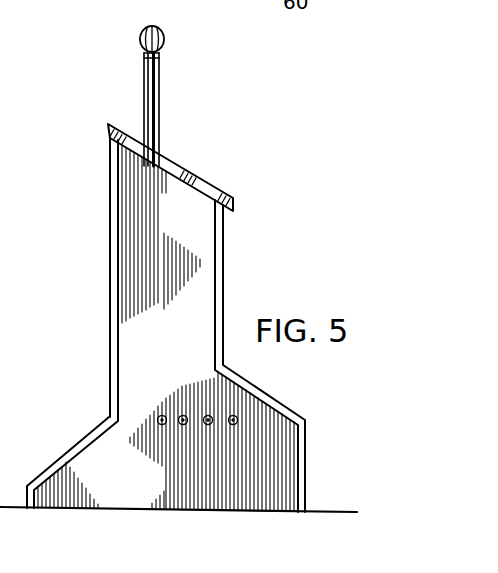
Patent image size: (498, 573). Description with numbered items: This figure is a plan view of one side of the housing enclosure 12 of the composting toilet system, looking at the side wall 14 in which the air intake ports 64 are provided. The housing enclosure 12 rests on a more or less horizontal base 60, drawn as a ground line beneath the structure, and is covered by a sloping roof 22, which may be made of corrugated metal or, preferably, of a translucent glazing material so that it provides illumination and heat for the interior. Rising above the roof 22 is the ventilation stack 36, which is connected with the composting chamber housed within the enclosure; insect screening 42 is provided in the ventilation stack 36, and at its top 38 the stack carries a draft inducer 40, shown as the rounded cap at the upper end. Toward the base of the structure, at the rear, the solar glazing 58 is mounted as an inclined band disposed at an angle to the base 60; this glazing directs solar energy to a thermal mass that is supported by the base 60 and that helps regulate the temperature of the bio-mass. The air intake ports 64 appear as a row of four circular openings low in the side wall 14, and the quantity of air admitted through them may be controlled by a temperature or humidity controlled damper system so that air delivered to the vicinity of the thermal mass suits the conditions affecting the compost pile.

The housing enclosure 12 is at (262, 277).
The side wall 14 is at (155, 238).
The roof 22 is at (182, 172).
The ventilation stack 36 is at (143, 101).
The top of ventilation stack 38 is at (165, 55).
The draft inducer 40 is at (147, 28).
The insect screening 42 is at (161, 89).
The solar glazing 58 is at (57, 458).
The base 60 is at (130, 509).
The air intake ports 64 is at (229, 418).